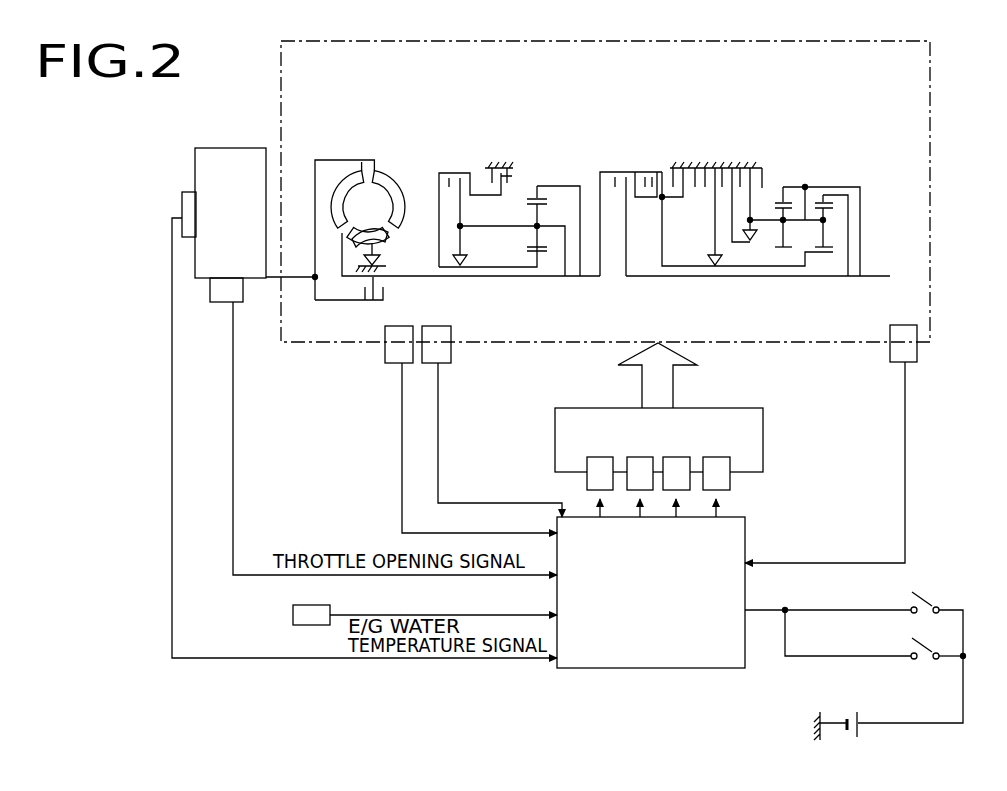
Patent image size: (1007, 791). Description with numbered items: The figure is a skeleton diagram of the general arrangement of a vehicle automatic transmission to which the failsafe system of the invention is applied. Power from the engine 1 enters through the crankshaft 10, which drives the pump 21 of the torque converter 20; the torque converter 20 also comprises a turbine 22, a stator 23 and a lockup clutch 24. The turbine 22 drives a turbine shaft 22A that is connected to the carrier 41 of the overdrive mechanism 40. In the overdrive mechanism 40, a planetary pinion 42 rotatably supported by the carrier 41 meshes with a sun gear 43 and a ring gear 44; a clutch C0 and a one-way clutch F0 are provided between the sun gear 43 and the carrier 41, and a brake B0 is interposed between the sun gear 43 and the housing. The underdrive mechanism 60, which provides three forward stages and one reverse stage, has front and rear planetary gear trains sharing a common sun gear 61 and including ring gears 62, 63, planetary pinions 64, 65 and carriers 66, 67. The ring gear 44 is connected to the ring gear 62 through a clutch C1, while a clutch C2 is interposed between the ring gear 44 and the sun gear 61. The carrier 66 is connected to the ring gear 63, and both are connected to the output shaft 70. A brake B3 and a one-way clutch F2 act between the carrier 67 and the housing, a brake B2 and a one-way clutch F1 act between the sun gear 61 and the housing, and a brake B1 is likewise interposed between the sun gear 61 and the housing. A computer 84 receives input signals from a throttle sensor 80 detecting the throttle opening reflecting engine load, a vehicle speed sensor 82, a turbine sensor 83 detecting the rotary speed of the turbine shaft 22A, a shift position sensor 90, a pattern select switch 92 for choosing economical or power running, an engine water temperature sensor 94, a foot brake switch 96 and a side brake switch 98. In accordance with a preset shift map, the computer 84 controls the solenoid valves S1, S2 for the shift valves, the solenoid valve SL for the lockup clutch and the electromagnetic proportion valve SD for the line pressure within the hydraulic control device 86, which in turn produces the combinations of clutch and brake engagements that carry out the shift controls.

The engine 1 is at (222, 153).
The crankshaft 10 is at (300, 282).
The torque converter 20 is at (367, 202).
The pump 21 is at (392, 183).
The turbine 22 is at (369, 209).
The turbine shaft 22A is at (427, 278).
The stator 23 is at (380, 237).
The lockup clutch 24 is at (338, 302).
The overdrive mechanism 40 is at (496, 174).
The carrier 41 is at (563, 227).
The planetary pinion 42 is at (528, 217).
The sun gear 43 is at (530, 250).
The ring gear 44 is at (528, 197).
The clutch C0 is at (460, 172).
The brake B0 is at (513, 172).
The one-way clutch F0 is at (465, 260).
The underdrive mechanism 60 is at (741, 195).
The common sun gear 61 is at (810, 262).
The ring gear 62 is at (820, 202).
The ring gear 63 is at (785, 188).
The planetary pinion 64 is at (825, 220).
The planetary pinion 65 is at (794, 234).
The carrier 66 is at (830, 240).
The carrier 67 is at (763, 195).
The output shaft 70 is at (882, 277).
The clutch C1 is at (622, 172).
The clutch C2 is at (652, 172).
The brake B1 is at (698, 168).
The brake B2 is at (723, 168).
The brake B3 is at (762, 172).
The one-way clutch F1 is at (712, 264).
The one-way clutch F2 is at (753, 233).
The throttle sensor 80 is at (212, 300).
The vehicle speed sensor 82 is at (890, 348).
The turbine sensor 83 is at (385, 352).
The computer (ECU) 84 is at (655, 668).
The hydraulic control device 86 is at (683, 430).
The shift position sensor 90 is at (452, 352).
The pattern select switch 92 is at (293, 612).
The engine water temperature sensor 94 is at (183, 193).
The foot brake switch 96 is at (927, 592).
The brake switch 98 is at (925, 657).
The solenoid valve S1 is at (600, 473).
The solenoid valve S2 is at (640, 473).
The solenoid valve SL is at (676, 473).
The electromagnetic proportion valve SD is at (716, 473).